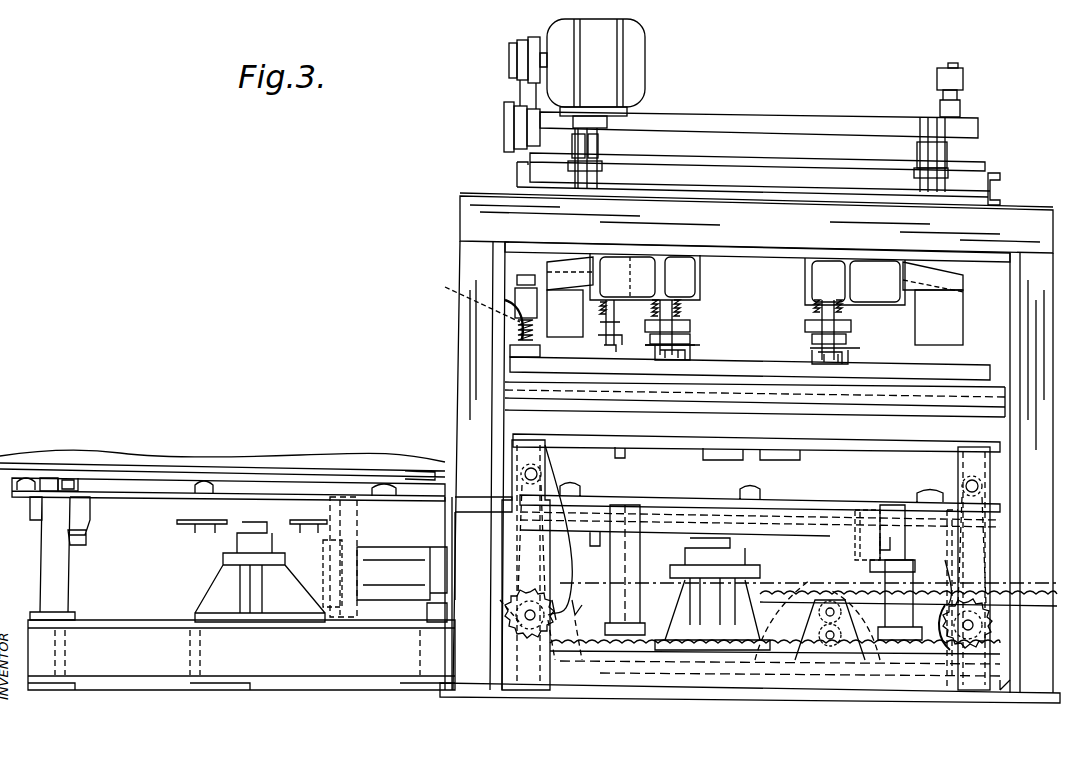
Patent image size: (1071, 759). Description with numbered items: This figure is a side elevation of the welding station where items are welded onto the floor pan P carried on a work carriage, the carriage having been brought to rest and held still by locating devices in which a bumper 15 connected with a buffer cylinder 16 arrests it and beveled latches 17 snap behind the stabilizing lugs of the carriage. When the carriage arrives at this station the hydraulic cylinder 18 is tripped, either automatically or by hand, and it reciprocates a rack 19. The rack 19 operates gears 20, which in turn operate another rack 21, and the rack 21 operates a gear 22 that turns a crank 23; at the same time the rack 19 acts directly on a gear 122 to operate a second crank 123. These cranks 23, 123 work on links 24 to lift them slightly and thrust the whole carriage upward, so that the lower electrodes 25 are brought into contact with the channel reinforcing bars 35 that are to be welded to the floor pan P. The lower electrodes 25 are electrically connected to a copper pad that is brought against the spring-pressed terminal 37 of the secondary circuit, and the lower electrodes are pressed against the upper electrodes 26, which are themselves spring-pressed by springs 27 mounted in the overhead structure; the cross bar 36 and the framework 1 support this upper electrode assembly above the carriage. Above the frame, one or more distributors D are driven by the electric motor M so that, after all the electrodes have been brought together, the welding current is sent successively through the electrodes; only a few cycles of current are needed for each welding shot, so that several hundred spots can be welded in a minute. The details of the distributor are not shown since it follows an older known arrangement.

The electric motor M is at (638, 40).
The distributor D is at (838, 118).
The table bed 1 is at (530, 410).
The bumper 15 is at (72, 478).
The buffer cylinder 16 is at (50, 478).
The beveled latch 17 is at (862, 565).
The hydraulic cylinder 18 is at (400, 580).
The rack 19 is at (605, 575).
The gears 20 is at (776, 690).
The rack 21 is at (665, 680).
The gear 22 is at (505, 690).
The crank 23 is at (508, 625).
The links 24 is at (540, 493).
The lower electrodes 25 is at (700, 352).
The upper electrodes 26 is at (695, 335).
The springs 27 is at (685, 318).
The channel reinforcing bars 35 is at (845, 352).
The cross bar 36 is at (968, 372).
The spring-pressed terminal 37 is at (512, 348).
The floor pan P is at (660, 346).
The gear 122 is at (950, 620).
The crank 123 is at (1000, 692).